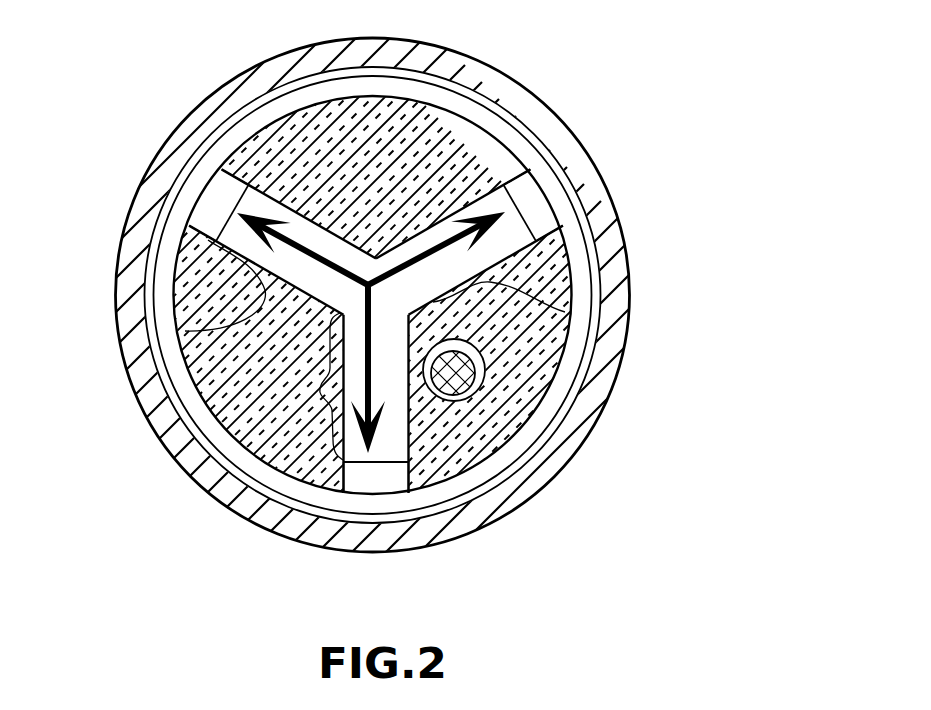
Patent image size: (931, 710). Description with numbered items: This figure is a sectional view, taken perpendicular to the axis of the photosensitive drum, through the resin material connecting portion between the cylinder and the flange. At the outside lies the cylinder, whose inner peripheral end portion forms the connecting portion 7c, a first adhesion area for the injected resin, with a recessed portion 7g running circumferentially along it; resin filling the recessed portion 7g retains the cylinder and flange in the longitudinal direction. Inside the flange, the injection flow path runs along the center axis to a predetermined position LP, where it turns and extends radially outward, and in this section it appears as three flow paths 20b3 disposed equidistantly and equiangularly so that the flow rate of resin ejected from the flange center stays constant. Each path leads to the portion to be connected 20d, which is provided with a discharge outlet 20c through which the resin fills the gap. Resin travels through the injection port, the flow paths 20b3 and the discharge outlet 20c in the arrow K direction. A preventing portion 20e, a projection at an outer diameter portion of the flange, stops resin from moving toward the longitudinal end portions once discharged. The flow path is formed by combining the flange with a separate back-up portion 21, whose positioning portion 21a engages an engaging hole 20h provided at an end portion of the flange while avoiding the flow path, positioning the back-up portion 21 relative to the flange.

The preventing portion 20e is at (570, 450).
The recessed portion 7g is at (535, 458).
The connecting portion 7c is at (497, 483).
The back-up portion 21 is at (515, 225).
The portion to be connected 20d is at (356, 493).
The discharge outlet 20c is at (195, 196).
The flow paths 20b3 is at (565, 312).
The positioning portion 21a is at (480, 381).
The engaging hole 20h is at (478, 393).
The arrow K direction K is at (371, 332).
The predetermined position LP is at (392, 288).